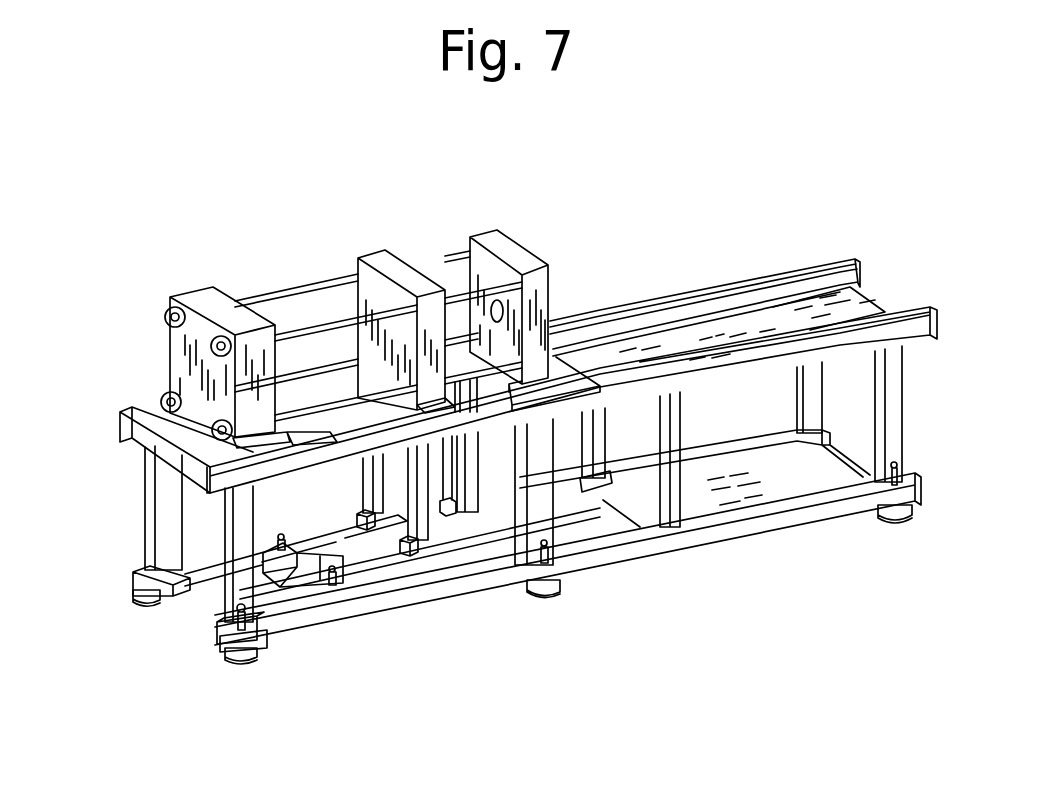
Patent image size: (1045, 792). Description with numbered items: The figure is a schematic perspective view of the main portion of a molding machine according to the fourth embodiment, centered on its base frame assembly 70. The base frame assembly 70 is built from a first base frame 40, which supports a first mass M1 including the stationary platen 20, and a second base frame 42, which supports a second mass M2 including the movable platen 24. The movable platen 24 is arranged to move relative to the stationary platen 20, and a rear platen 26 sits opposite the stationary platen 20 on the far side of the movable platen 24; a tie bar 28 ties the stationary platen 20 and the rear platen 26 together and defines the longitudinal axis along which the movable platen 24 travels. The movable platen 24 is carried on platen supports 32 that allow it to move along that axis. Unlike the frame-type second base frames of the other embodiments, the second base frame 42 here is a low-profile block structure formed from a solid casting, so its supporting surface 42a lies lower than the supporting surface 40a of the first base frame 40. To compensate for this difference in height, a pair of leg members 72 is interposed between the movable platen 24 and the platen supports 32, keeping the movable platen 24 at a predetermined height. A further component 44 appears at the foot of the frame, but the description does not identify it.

The stationary platen 20 is at (530, 247).
The movable platen 24 is at (356, 258).
The rear platen 26 is at (185, 290).
The tie bar 28 is at (438, 256).
The platen support 32 is at (372, 533).
The first base frame 40 is at (140, 530).
The supporting surface 40a is at (144, 406).
The second base frame 42 is at (293, 569).
The supporting surface 42a is at (325, 532).
The leveling foot 44 is at (232, 660).
The base frame assembly 70 is at (126, 478).
The leg members 72 is at (423, 489).
The first mass M1 is at (548, 273).
The second mass M2 is at (371, 272).